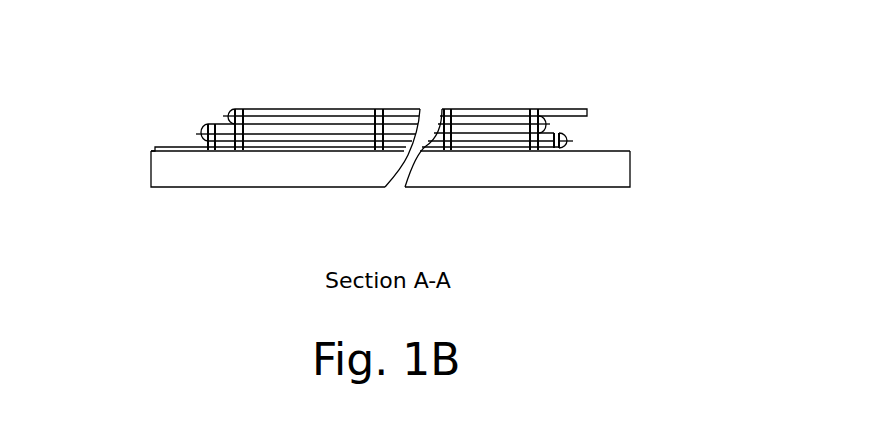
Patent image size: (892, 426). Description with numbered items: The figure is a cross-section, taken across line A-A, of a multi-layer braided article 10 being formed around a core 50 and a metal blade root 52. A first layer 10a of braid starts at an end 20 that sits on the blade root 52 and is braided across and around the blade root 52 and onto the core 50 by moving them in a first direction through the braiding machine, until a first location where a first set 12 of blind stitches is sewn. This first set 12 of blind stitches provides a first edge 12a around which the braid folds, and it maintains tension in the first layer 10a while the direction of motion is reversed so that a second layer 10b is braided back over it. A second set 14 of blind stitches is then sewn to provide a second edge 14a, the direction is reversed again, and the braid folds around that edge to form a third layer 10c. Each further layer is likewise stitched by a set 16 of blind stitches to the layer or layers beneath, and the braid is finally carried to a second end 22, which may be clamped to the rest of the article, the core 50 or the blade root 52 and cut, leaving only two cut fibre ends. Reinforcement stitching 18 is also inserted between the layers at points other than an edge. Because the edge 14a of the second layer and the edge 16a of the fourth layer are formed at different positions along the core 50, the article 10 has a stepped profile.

The multi-layer braided article 10 is at (527, 85).
The first layer 10a is at (263, 147).
The second layer 10b is at (308, 138).
The third layer 10c is at (355, 130).
The first set of blind stitches 12 is at (563, 134).
The first edge 12a is at (566, 150).
The second set of blind stitches 14 is at (212, 127).
The second edge 14a is at (200, 135).
The set of blind stitches 16 is at (240, 108).
The edge of the fourth layer 16a is at (232, 108).
The reinforcement stitching 18 is at (442, 108).
The end 20 is at (157, 147).
The second end 22 is at (588, 110).
The core 50 is at (605, 177).
The metal blade root 52 is at (172, 187).